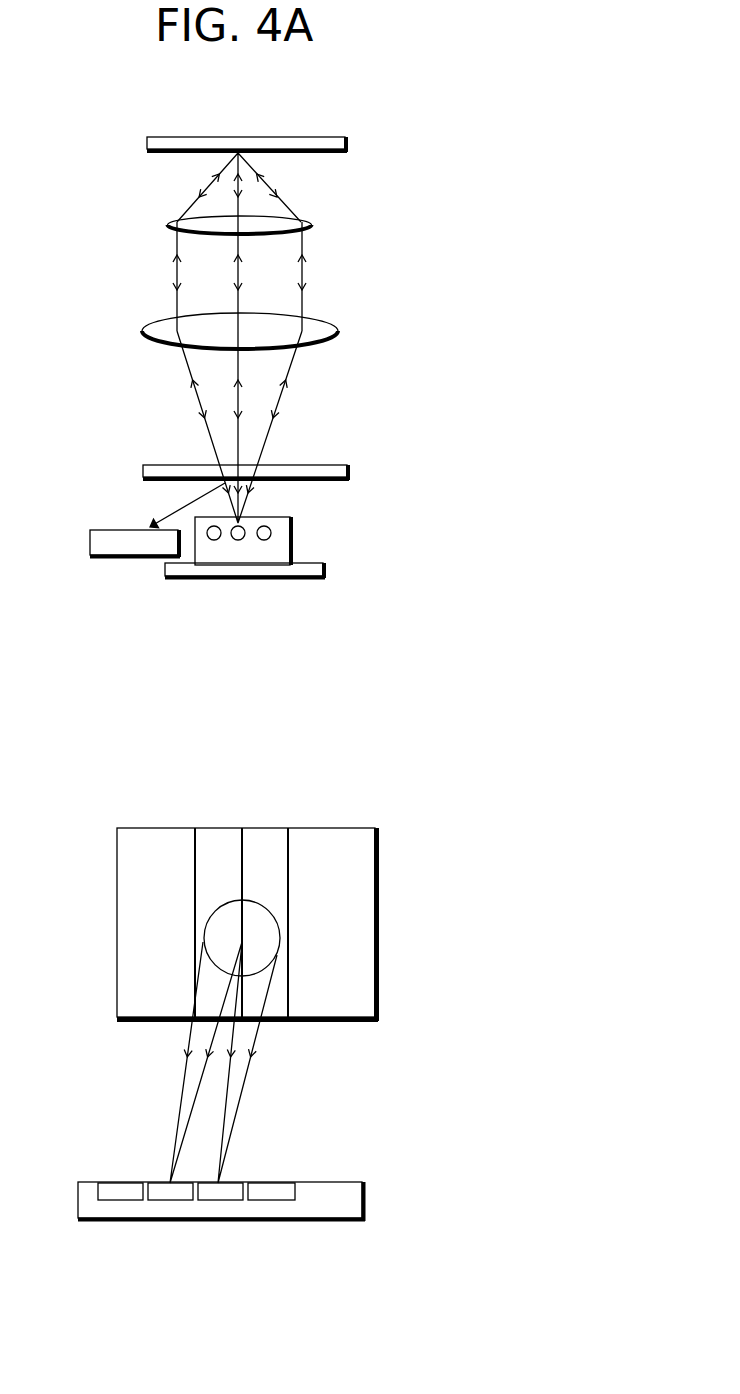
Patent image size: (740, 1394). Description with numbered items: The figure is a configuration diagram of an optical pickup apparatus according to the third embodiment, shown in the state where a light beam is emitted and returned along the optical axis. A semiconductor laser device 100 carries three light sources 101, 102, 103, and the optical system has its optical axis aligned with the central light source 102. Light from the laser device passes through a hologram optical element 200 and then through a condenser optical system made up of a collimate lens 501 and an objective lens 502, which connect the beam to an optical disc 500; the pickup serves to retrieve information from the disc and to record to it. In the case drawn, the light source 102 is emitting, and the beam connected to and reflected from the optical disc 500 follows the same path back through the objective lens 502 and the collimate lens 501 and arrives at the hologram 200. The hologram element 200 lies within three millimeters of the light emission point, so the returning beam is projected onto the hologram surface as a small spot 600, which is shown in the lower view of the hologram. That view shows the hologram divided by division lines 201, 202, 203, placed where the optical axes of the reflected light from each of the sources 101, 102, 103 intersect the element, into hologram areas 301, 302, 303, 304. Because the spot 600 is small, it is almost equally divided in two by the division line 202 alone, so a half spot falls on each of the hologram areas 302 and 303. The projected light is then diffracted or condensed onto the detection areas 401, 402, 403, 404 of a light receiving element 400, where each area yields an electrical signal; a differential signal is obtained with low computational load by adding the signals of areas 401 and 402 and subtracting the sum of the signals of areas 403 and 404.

The semiconductor laser device 100 is at (297, 573).
The light source 101 is at (208, 543).
The light source 102 is at (237, 545).
The light source 103 is at (262, 542).
The hologram optical element 200 is at (333, 470).
The division line 201 is at (195, 828).
The division line 202 is at (242, 828).
The division line 203 is at (288, 828).
The hologram area 301 is at (156, 922).
The hologram area 302 is at (218, 922).
The hologram area 303 is at (265, 922).
The hologram area 304 is at (331, 922).
The light receiving element 400 is at (106, 530).
The detection area 401 is at (117, 1202).
The detection area 402 is at (172, 1202).
The detection area 403 is at (220, 1202).
The detection area 404 is at (277, 1202).
The optical disc 500 is at (192, 137).
The collimate lens 501 is at (325, 329).
The objective lens 502 is at (308, 223).
The light beam spot 600 is at (277, 920).